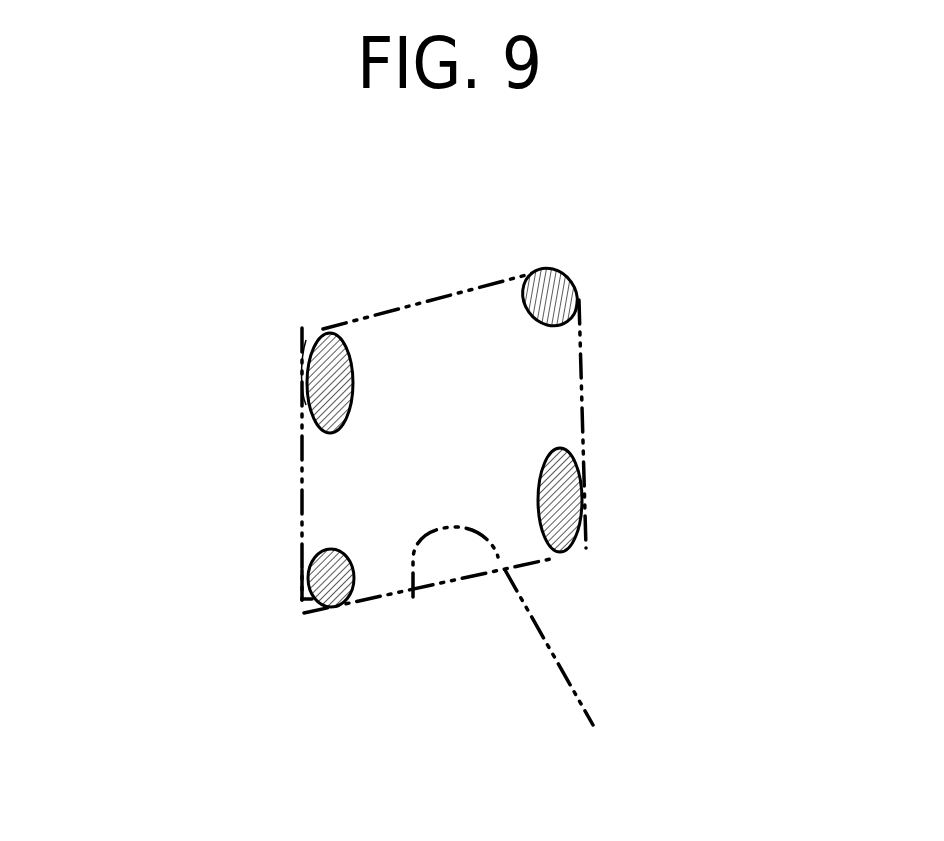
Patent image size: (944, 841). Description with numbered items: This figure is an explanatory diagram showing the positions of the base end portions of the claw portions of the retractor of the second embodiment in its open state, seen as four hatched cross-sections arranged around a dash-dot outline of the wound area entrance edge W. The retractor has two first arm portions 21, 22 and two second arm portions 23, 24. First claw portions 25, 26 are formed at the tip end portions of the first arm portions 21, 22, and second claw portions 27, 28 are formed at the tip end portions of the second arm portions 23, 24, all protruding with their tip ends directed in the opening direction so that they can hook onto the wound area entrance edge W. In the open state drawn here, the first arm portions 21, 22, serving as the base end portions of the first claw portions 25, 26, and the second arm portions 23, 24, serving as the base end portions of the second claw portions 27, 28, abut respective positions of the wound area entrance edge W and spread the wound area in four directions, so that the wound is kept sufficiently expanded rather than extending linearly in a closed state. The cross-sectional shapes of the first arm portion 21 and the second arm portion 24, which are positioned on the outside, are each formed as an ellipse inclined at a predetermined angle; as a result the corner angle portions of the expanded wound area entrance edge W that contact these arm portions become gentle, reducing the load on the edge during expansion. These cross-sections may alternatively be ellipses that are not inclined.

The first arm portion 21 is at (558, 270).
The first claw portion 25 is at (666, 246).
The first arm portion 22 is at (570, 512).
The first claw portion 26 is at (705, 500).
The second arm portion 23 is at (322, 372).
The second claw portion 27 is at (201, 352).
The second arm portion 24 is at (332, 580).
The second claw portion 28 is at (220, 636).
The wound area entrance edge W is at (561, 677).